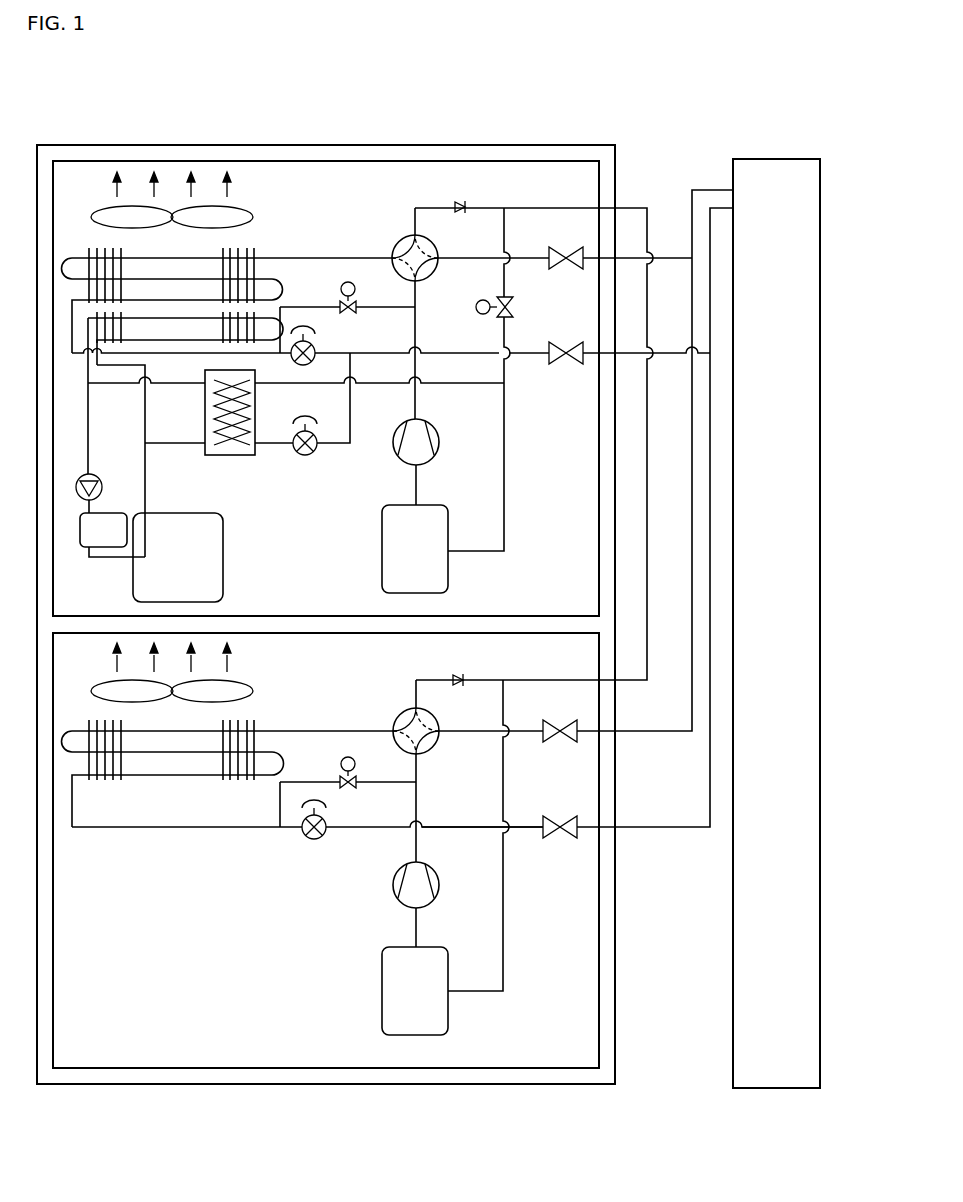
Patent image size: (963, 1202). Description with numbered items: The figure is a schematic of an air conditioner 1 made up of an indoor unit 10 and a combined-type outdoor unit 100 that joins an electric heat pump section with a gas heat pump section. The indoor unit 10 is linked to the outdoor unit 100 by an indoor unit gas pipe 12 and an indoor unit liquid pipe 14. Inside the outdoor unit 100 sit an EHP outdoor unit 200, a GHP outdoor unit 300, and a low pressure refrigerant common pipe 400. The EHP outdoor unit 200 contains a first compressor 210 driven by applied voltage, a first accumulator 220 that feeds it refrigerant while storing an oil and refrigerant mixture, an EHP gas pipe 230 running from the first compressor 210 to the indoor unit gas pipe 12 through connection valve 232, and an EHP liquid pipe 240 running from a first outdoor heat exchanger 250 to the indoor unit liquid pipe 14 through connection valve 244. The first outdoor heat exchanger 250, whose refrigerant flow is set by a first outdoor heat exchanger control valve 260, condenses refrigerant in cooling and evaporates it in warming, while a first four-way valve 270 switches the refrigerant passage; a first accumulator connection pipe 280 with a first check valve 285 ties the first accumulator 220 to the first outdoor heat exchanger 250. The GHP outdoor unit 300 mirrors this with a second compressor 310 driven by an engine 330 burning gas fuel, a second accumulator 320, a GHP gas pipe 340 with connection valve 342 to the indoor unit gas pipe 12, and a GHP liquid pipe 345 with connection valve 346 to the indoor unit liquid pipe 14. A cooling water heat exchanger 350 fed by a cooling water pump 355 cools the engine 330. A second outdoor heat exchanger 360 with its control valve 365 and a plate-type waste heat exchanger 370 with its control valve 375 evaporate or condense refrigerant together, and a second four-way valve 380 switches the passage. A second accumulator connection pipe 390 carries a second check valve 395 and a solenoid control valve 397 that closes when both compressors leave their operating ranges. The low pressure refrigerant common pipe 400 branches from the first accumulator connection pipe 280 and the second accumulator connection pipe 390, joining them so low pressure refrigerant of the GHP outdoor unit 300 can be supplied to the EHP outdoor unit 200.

The air conditioner 1 is at (644, 128).
The indoor unit 10 is at (778, 1089).
The indoor unit gas pipe 12 is at (690, 545).
The indoor unit liquid pipe 14 is at (708, 622).
The outdoor unit 100 is at (362, 1085).
The EHP outdoor unit 200 is at (247, 1069).
The first compressor 210 is at (393, 884).
The first accumulator 220 is at (382, 991).
The EHP gas pipe 230 is at (468, 730).
The connection valve 232 is at (553, 719).
The EHP liquid pipe 240 is at (457, 824).
The connection valve 244 is at (553, 814).
The first outdoor heat exchanger 250 is at (150, 792).
The first outdoor heat exchanger control valve 260 is at (314, 841).
The first four-way valve 270 is at (398, 718).
The first accumulator connection pipe 280 is at (504, 879).
The first check valve 285 is at (464, 674).
The GHP outdoor unit 300 is at (282, 160).
The second compressor 310 is at (425, 461).
The second accumulator 320 is at (382, 554).
The engine 330 is at (224, 531).
The GHP gas pipe 340 is at (467, 256).
The connection valve 342 is at (560, 246).
The GHP liquid pipe 345 is at (443, 352).
The connection valve 346 is at (560, 366).
The cooling water heat exchanger 350 is at (104, 548).
The cooling water pump 355 is at (100, 474).
The second outdoor heat exchanger 360 is at (285, 246).
The second outdoor heat exchanger control valve 365 is at (316, 346).
The waste heat exchanger 370 is at (238, 456).
The waste heat exchanger control valve 375 is at (317, 433).
The second four-way valve 380 is at (398, 244).
The second accumulator connection pipe 390 is at (504, 501).
The second check valve 395 is at (460, 200).
The control valve 397 is at (512, 306).
The low pressure refrigerant common pipe 400 is at (630, 438).